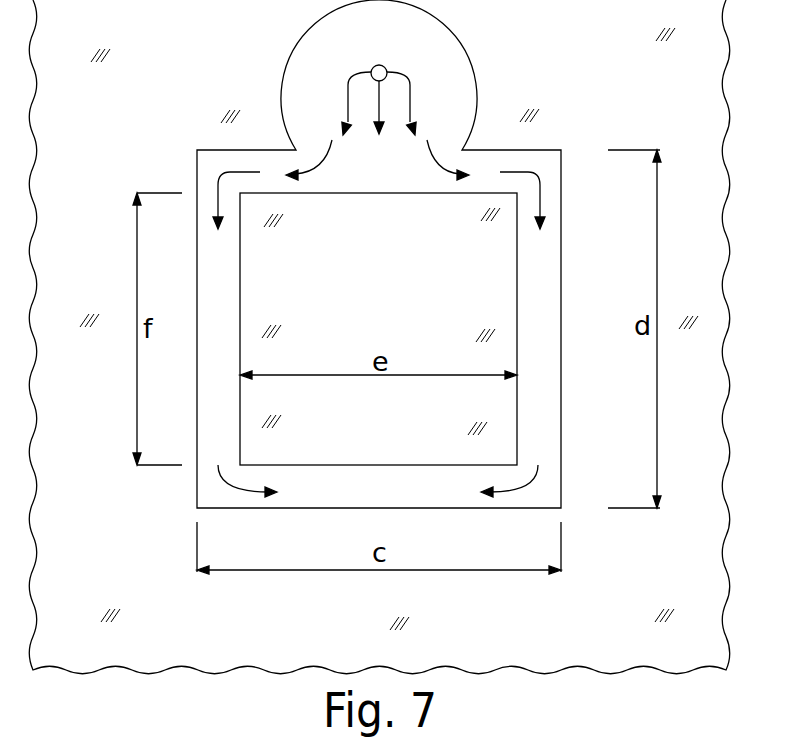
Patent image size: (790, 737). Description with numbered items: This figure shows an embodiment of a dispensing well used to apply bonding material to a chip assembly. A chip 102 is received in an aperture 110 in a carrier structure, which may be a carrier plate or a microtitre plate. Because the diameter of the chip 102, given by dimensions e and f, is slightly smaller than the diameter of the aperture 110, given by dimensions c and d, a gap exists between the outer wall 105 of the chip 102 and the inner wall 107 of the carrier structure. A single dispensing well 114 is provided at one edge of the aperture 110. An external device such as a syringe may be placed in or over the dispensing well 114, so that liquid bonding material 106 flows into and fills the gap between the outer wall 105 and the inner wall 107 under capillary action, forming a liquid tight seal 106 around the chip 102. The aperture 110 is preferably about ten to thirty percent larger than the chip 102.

The chip 102 is at (390, 275).
The outer wall of the chip 105 is at (393, 350).
The liquid tight seal / bonding material 106 is at (540, 412).
The inner wall of the carrier structure 107 is at (424, 254).
The aperture 110 is at (538, 292).
The dispensing well 114 is at (452, 120).